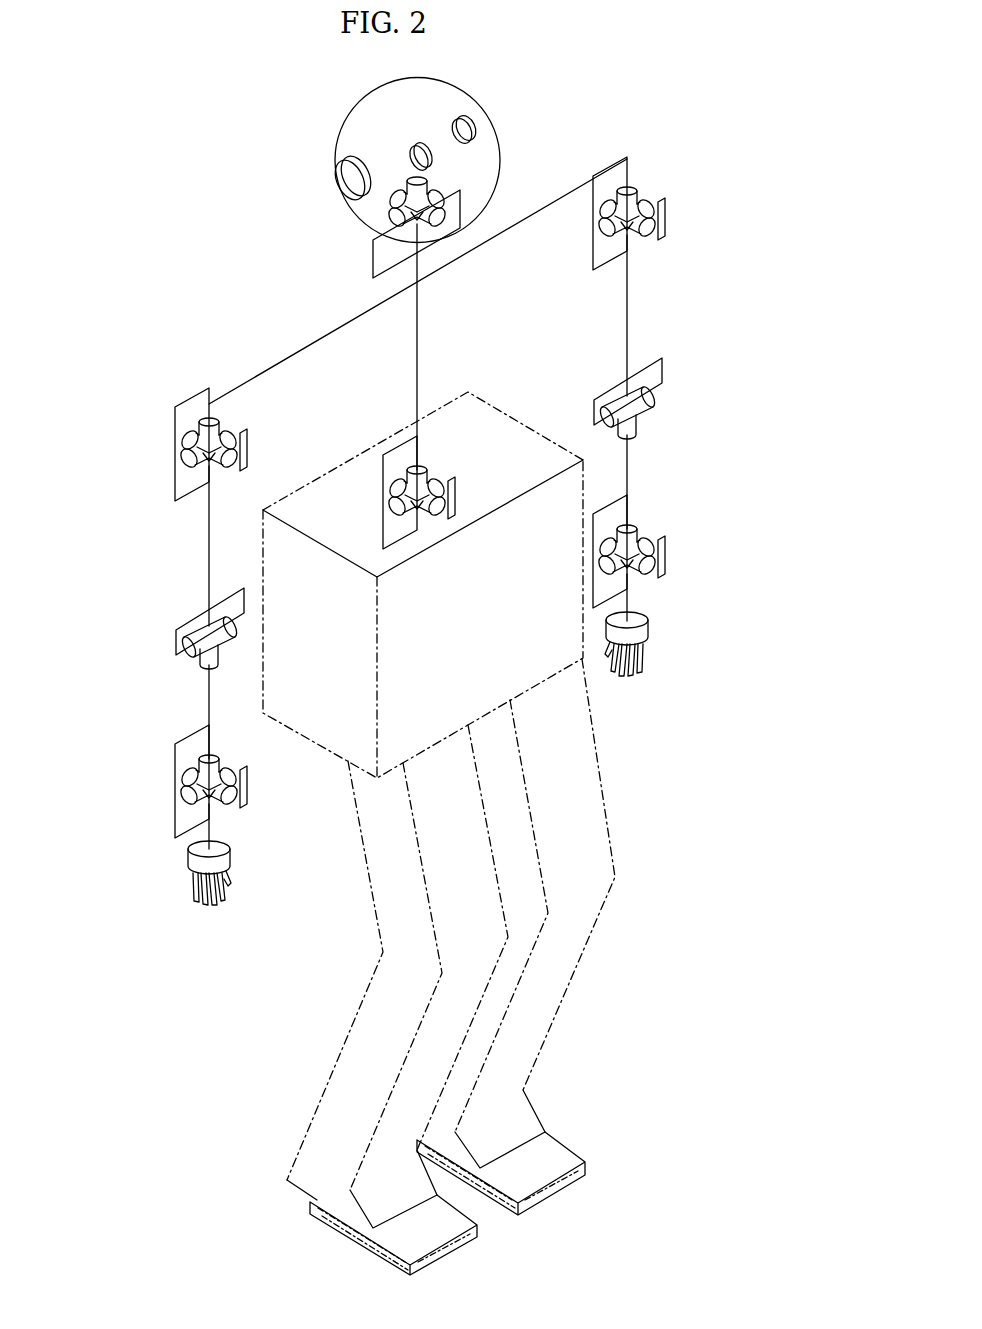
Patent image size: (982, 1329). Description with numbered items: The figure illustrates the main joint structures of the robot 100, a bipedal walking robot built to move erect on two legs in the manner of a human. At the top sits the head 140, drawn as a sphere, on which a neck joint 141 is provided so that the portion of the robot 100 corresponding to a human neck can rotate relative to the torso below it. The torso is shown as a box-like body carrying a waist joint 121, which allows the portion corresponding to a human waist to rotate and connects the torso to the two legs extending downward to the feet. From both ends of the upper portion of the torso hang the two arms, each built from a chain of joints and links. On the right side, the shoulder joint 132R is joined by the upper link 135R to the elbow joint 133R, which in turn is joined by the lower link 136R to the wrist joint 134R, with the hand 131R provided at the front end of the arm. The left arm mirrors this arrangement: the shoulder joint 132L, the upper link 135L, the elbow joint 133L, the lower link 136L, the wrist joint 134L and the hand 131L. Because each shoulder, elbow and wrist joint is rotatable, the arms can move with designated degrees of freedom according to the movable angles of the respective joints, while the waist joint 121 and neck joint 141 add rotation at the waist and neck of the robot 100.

The robot 100 is at (197, 252).
The head 140 is at (360, 111).
The neck joint 141 is at (383, 213).
The waist joint 121 is at (432, 493).
The shoulder joint 132R is at (178, 440).
The upper link 135R is at (208, 545).
The elbow joint 133R is at (182, 647).
The lower link 136R is at (208, 712).
The wrist joint 134R is at (185, 783).
The hand 131R is at (188, 865).
The shoulder joint 132L is at (660, 212).
The upper link 135L is at (627, 304).
The elbow joint 133L is at (655, 388).
The lower link 136L is at (627, 472).
The wrist joint 134L is at (665, 545).
The hand 131L is at (648, 630).